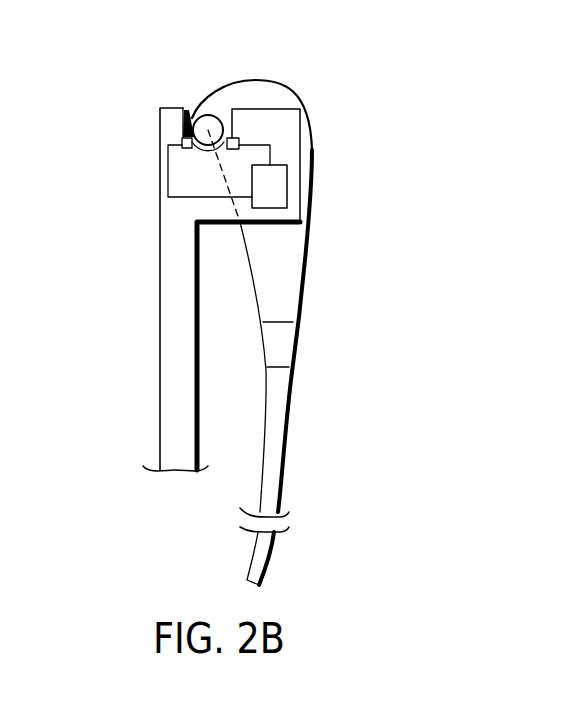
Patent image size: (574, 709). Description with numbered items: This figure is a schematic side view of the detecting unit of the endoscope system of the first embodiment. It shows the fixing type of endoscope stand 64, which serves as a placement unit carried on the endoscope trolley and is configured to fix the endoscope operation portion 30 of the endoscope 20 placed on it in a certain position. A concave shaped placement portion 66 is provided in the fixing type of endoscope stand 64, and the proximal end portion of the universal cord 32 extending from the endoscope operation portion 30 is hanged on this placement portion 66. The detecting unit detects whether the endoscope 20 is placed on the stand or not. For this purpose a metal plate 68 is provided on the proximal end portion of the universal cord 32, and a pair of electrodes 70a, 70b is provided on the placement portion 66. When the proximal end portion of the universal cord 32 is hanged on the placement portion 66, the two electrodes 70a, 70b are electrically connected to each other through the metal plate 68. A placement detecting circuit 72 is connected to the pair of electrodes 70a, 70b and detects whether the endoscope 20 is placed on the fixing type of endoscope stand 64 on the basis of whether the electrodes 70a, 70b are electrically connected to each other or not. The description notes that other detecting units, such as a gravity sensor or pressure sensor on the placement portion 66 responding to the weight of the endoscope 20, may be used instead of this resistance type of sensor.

The endoscope 20 is at (307, 306).
The endoscope operation portion 30 is at (253, 94).
The universal cord 32 is at (207, 127).
The fixing type of endoscope stand 64 is at (132, 366).
The placement portion 66 is at (168, 108).
The metal plate 68 is at (206, 150).
The electrode 70a is at (240, 138).
The electrode 70b is at (181, 138).
The placement detecting circuit 72 is at (287, 197).